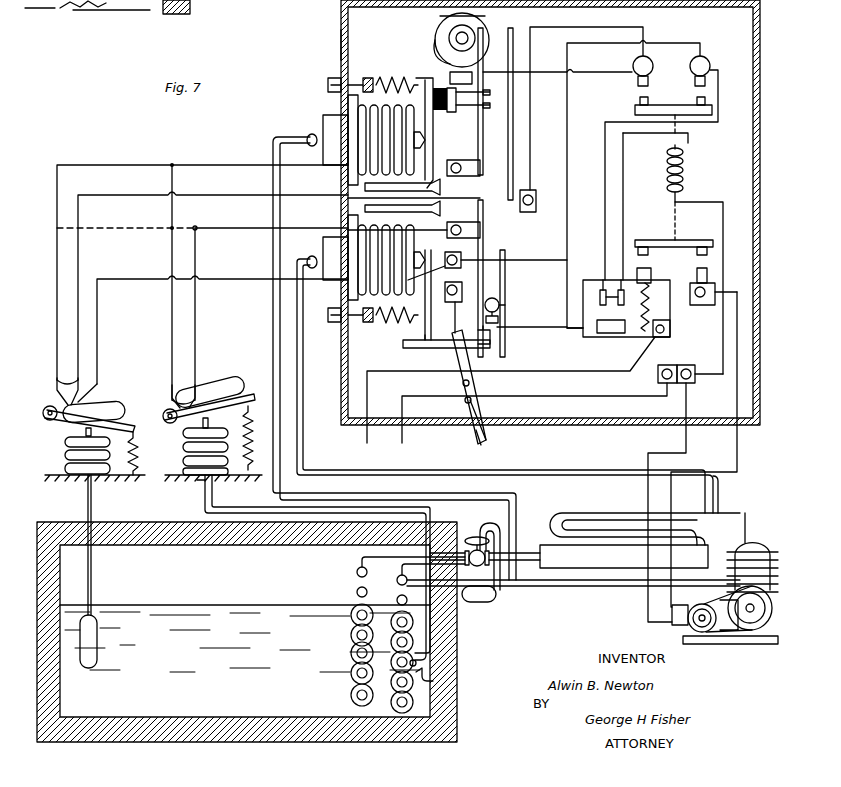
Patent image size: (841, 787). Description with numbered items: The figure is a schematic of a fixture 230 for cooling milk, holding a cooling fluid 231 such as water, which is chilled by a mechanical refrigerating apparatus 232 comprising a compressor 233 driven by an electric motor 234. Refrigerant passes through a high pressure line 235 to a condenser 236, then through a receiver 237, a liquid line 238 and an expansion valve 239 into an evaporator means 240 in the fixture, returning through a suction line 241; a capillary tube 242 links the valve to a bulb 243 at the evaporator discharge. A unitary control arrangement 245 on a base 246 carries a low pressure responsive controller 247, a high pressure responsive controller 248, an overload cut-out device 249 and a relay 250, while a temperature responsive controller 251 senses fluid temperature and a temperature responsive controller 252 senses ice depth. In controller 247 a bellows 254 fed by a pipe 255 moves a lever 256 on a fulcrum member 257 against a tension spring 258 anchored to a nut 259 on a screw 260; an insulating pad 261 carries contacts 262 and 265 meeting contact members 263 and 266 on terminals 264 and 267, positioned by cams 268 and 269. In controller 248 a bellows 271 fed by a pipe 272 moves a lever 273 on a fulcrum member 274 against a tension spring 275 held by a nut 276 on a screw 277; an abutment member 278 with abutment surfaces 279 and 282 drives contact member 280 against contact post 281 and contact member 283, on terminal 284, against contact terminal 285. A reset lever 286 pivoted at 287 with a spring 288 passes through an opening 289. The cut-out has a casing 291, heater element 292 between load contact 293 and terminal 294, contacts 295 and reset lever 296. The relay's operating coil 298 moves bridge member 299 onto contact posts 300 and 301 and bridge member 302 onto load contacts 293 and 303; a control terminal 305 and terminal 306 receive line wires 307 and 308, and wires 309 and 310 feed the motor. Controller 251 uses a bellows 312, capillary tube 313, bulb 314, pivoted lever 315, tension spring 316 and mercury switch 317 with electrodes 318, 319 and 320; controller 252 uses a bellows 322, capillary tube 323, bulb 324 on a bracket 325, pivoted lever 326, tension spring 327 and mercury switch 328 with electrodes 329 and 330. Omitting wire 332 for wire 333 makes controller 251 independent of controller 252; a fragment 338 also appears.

The fixture 230 is at (52, 504).
The cooling fluid 231 is at (212, 608).
The mechanical refrigerating apparatus 232 is at (762, 537).
The compressor 233 is at (760, 600).
The electric motor 234 is at (680, 626).
The high pressure line 235 is at (755, 496).
The condenser 236 is at (584, 518).
The receiver 237 is at (624, 556).
The liquid line 238 is at (529, 550).
The expansion valve 239 is at (471, 533).
The evaporator means 240 is at (357, 575).
The suction or low pressure line 241 is at (544, 587).
The capillary tube 242 is at (508, 508).
The bulb 243 is at (474, 605).
The unitary control arrangement 245 is at (322, 21).
The base 246 is at (341, 45).
The low pressure responsive controller 247 is at (318, 107).
The high pressure responsive controller 248 is at (318, 249).
The overload cut-out device 249 is at (582, 352).
The starter or relay 250 is at (693, 171).
The temperature responsive controller 251 is at (135, 342).
The temperature responsive controller 252 is at (233, 325).
The bellows 254 is at (381, 113).
The pipe 255 is at (272, 138).
The lever 256 is at (432, 160).
The fulcrum member 257 is at (390, 185).
The tension spring 258 is at (384, 80).
The nut 259 is at (368, 78).
The screw 260 is at (328, 83).
The insulating pad 261 is at (442, 110).
The contact 262 is at (463, 115).
The contact member 263 is at (483, 132).
The terminal 264 is at (461, 174).
The contact 265 is at (476, 81).
The contact member 266 is at (515, 118).
The terminal 267 is at (553, 167).
The cam 268 is at (430, 36).
The cam 269 is at (463, 14).
The bellows 271 is at (370, 293).
The pipe 272 is at (292, 378).
The lever 273 is at (428, 300).
The fulcrum member 274 is at (380, 209).
The tension spring 275 is at (390, 318).
The nut 276 is at (368, 325).
The screw 277 is at (328, 318).
The abutment member 278 is at (422, 348).
The abutment surface 279 is at (483, 354).
The contact member 280 is at (506, 308).
The contact post 281 is at (490, 297).
The abutment surface 282 is at (455, 341).
The contact member 283 is at (522, 335).
The terminal 284 is at (465, 222).
The contact terminal 285 is at (452, 283).
The lever 286 is at (480, 404).
The pivot 287 is at (470, 383).
The spring 288 is at (465, 400).
The opening 289 is at (478, 440).
The casing 291 is at (572, 329).
The heater element 292 is at (648, 313).
The load contact 293 is at (644, 263).
The terminal 294 is at (666, 334).
The contacts 295 is at (602, 288).
The reset lever 296 is at (613, 332).
The operating coil 298 is at (682, 178).
The bridge member 299 is at (632, 108).
The contact post 300 is at (636, 72).
The contact post 301 is at (692, 75).
The bridge member 302 is at (668, 238).
The load contact 303 is at (690, 300).
The control terminal 305 is at (442, 247).
The terminal 306 is at (666, 364).
The line wire 307 is at (365, 444).
The line wire 308 is at (402, 450).
The wire 309 is at (685, 443).
The wire 310 is at (738, 447).
The bellows 312 is at (65, 453).
The capillary tube 313 is at (92, 500).
The bulb 314 is at (93, 618).
The pivoted lever 315 is at (52, 420).
The tension spring 316 is at (132, 454).
The mercury switch 317 is at (118, 410).
The electrode 318 is at (58, 393).
The electrode 319 is at (57, 376).
The electrode 320 is at (88, 402).
The bellows 322 is at (183, 450).
The capillary tube 323 is at (202, 496).
The bulb 324 is at (418, 664).
The bracket 325 is at (435, 683).
The pivoted lever 326 is at (210, 413).
The tension spring 327 is at (238, 480).
The mercury switch 328 is at (240, 384).
The electrode 329 is at (175, 390).
The electrode 330 is at (193, 388).
The wire 332 is at (90, 165).
The wire 333 is at (95, 234).
The fragment 338 is at (119, 3).